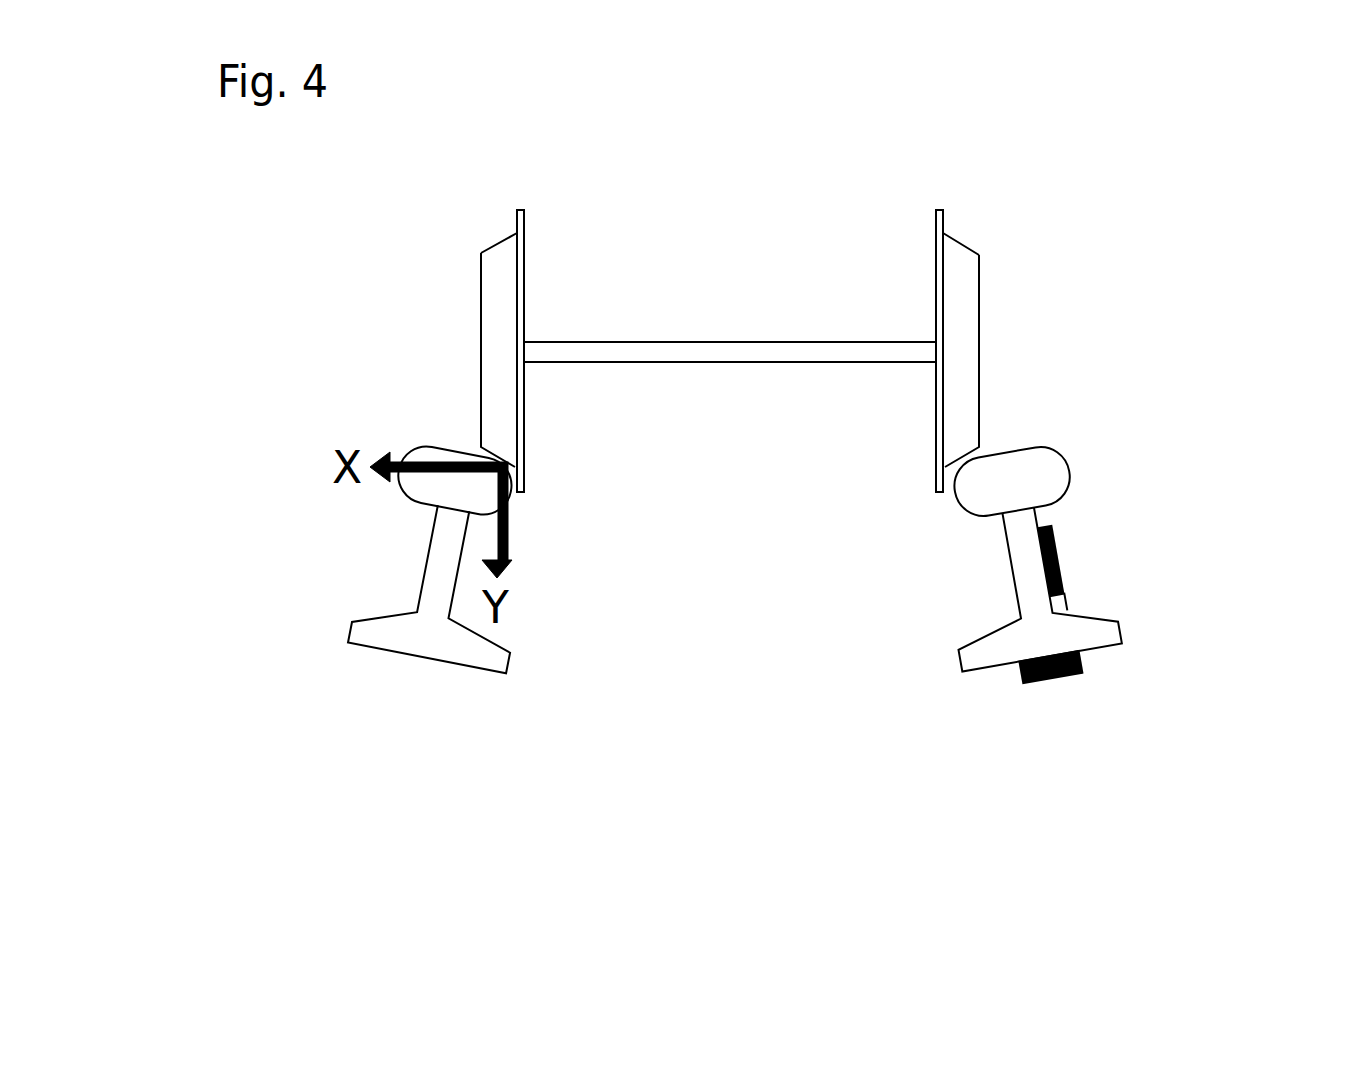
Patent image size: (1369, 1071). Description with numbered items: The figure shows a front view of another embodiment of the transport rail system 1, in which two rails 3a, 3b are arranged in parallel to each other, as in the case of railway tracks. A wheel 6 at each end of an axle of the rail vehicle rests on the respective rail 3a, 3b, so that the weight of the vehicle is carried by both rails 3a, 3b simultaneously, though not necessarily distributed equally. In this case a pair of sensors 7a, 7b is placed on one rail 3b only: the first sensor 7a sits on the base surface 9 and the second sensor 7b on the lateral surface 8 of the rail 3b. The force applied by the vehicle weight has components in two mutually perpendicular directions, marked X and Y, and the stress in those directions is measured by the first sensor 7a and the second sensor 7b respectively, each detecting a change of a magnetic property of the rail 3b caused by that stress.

The transport rail system 1 is at (304, 772).
The wheel 6 is at (500, 277).
The rail 3a is at (452, 490).
The rail 3b is at (977, 495).
The first sensor 7a is at (1040, 682).
The second sensor 7b is at (1060, 535).
The lateral surface 8 is at (1074, 608).
The base surface 9 is at (1083, 650).